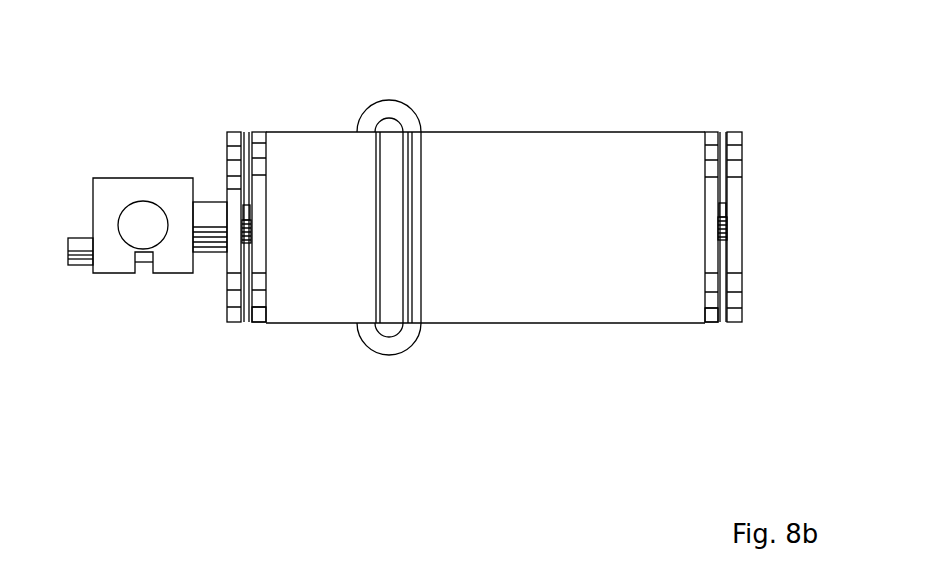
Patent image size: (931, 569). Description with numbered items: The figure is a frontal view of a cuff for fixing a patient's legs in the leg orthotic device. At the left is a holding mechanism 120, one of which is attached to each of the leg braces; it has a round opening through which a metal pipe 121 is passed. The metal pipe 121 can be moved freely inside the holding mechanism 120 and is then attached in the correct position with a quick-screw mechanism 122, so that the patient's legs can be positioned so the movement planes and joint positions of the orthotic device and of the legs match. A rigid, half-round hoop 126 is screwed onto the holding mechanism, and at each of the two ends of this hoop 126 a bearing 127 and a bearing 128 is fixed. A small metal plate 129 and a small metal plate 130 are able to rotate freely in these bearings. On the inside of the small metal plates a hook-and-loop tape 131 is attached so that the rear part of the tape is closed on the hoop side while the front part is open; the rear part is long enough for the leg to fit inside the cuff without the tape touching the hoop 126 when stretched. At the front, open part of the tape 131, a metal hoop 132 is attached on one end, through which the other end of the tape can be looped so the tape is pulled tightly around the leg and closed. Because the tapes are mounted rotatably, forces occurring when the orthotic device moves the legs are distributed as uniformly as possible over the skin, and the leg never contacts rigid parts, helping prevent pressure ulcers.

The holding mechanism 120 is at (105, 190).
The metal pipe 121 is at (208, 213).
The quick-screw mechanism 122 is at (147, 263).
The rigid, half-round hoop 126 is at (232, 130).
The bearing 127 is at (247, 222).
The bearing 128 is at (722, 223).
The small metal plate 129 is at (260, 313).
The small metal plate 130 is at (712, 318).
The hook-and-loop tape 131 is at (525, 147).
The metal hoop 132 is at (387, 110).